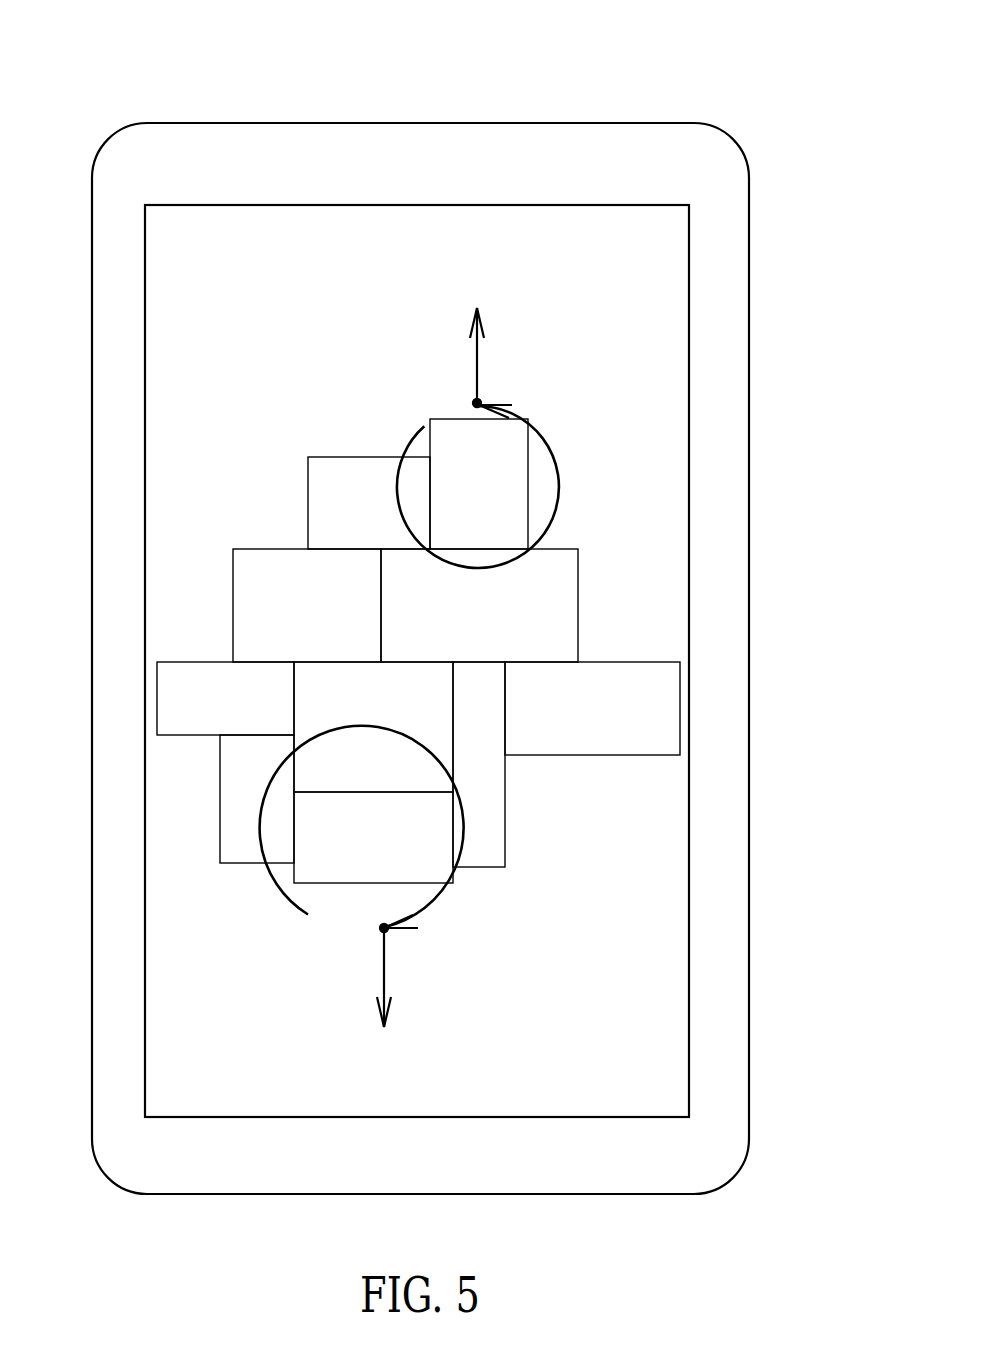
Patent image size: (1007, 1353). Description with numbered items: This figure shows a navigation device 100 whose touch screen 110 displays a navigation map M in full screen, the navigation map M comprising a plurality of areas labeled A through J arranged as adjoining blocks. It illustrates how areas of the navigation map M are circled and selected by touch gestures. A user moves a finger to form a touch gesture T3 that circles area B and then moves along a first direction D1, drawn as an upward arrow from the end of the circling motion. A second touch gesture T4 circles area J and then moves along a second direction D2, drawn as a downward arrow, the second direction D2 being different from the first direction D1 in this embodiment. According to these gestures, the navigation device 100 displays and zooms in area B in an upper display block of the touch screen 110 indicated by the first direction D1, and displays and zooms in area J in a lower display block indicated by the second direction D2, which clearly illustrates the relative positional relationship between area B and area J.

The navigation device 100 is at (704, 93).
The touch screen 110 is at (690, 598).
The navigation map M is at (305, 495).
The touch gesture T3 is at (408, 427).
The touch gesture T4 is at (450, 905).
The first direction D1 is at (499, 355).
The second direction D2 is at (405, 977).